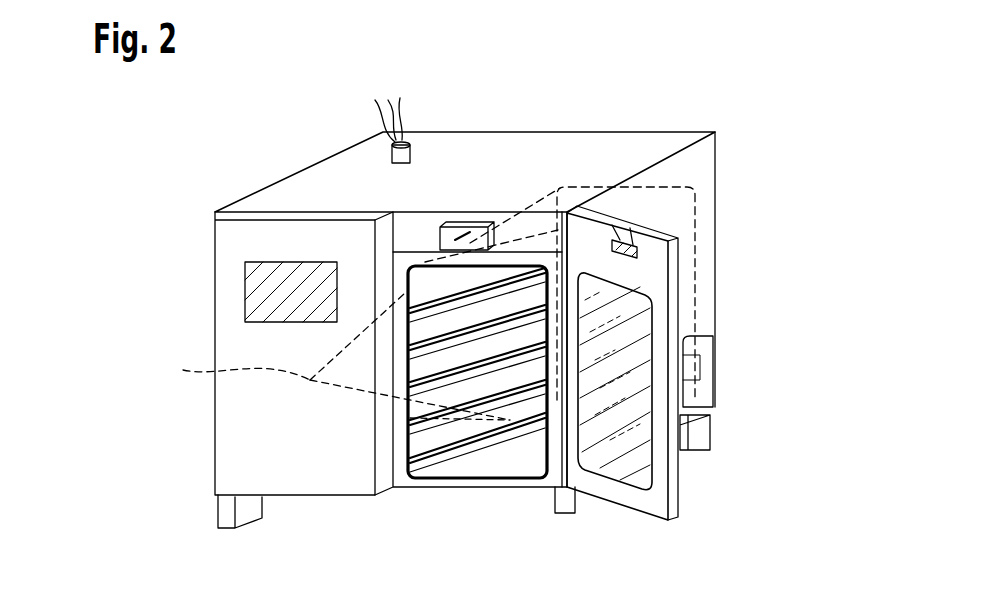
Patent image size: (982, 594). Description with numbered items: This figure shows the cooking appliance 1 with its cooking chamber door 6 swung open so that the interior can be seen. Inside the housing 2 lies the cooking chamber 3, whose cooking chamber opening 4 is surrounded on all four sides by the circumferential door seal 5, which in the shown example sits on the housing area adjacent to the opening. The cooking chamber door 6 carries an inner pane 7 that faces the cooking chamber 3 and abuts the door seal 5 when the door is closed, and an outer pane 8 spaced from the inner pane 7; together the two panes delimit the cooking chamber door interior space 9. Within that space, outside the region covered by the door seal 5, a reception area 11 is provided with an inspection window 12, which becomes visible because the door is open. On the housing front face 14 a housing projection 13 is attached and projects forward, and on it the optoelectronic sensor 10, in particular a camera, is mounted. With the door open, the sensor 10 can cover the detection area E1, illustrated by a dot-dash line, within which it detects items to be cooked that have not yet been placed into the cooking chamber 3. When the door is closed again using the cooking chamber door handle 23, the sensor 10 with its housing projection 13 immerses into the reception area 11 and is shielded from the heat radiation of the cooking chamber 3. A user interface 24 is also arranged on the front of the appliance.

The cooking appliance 1 is at (752, 152).
The housing 2 is at (668, 127).
The cooking chamber 3 is at (485, 388).
The cooking chamber opening 4 is at (423, 288).
The door seal 5 is at (428, 224).
The cooking chamber door 6 is at (690, 280).
The inner pane 7 is at (616, 361).
The outer pane 8 is at (680, 313).
The cooking chamber door interior space 9 is at (677, 440).
The optoelectronic sensor 10 is at (471, 226).
The reception area 11 is at (652, 243).
The inspection window 12 is at (638, 246).
The housing projection 13 is at (494, 234).
The housing front face 14 is at (426, 258).
The cooking chamber door handle 23 is at (687, 358).
The user interface 24 is at (245, 298).
The detection area E1 is at (330, 356).